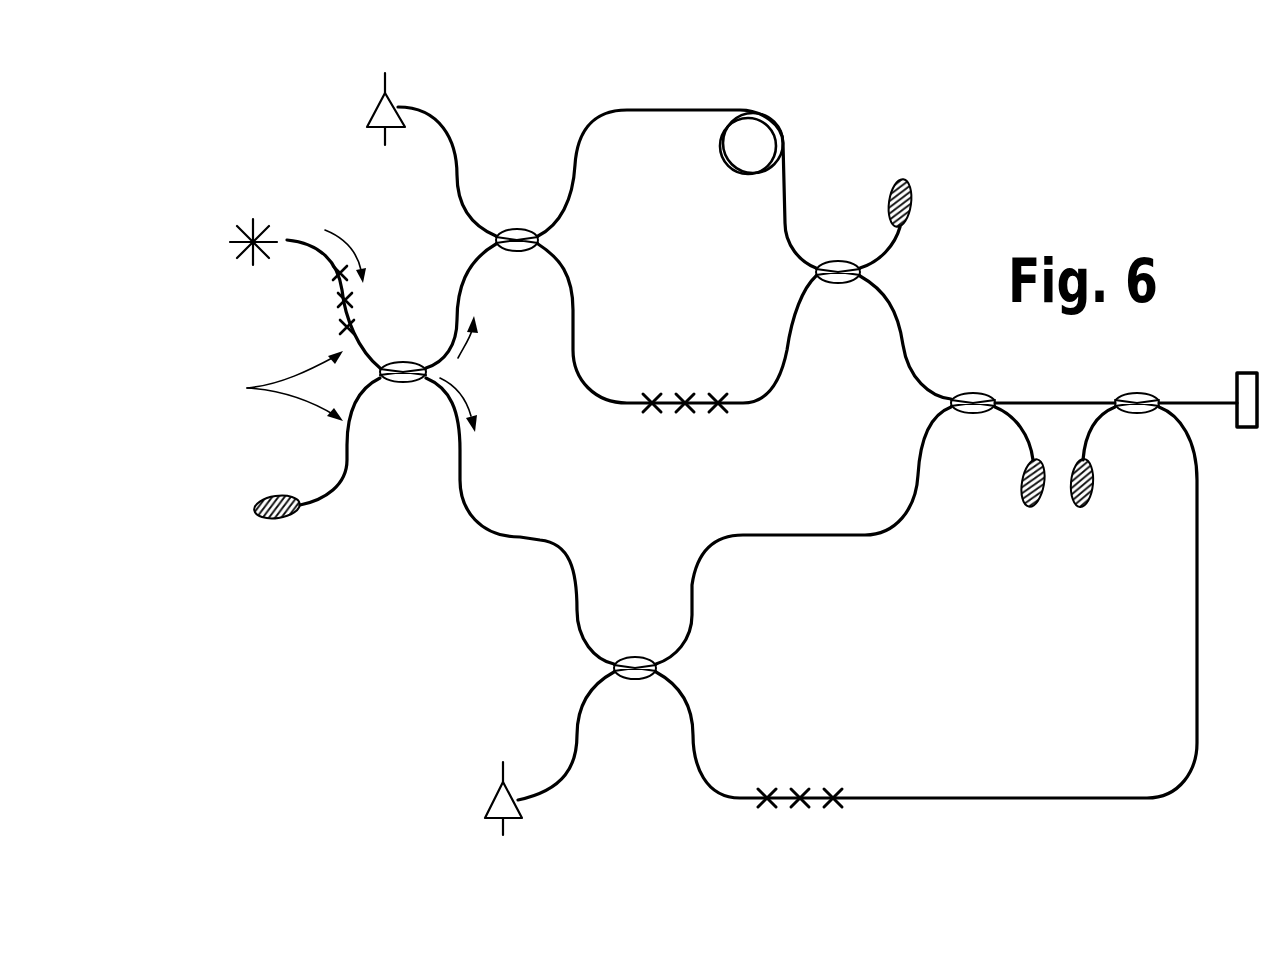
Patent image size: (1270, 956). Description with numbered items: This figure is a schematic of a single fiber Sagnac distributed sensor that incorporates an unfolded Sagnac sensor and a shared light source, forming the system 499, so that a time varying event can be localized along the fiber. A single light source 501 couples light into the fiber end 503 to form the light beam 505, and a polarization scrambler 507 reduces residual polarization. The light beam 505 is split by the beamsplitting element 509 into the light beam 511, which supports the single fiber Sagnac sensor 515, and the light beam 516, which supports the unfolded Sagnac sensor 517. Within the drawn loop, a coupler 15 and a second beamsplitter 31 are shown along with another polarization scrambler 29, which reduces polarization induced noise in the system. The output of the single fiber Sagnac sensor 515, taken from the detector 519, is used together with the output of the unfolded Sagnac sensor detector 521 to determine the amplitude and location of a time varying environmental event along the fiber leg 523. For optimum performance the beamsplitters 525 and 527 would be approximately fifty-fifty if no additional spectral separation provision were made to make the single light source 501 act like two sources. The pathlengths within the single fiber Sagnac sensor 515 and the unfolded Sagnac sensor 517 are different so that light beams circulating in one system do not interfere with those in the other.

The optical coupler 15 is at (510, 227).
The polarization scrambler 29 is at (685, 413).
The second beamsplitter 31 is at (840, 258).
The system 499 is at (267, 386).
The light source 501 is at (257, 227).
The fiber end 503 is at (287, 240).
The light beam 505 is at (348, 246).
The polarization scrambler 507 is at (338, 300).
The beamsplitting element 509 is at (397, 383).
The light beam 511 is at (462, 354).
The single fiber Sagnac sensor 515 is at (1212, 195).
The light beam 516 is at (467, 390).
The unfolded Sagnac sensor 517 is at (1190, 822).
The detector 519 is at (372, 103).
The unfolded Sagnac sensor detector 521 is at (495, 800).
The fiber leg 523 is at (1137, 378).
The beamsplitter 525 is at (970, 415).
The beamsplitter 527 is at (1137, 415).